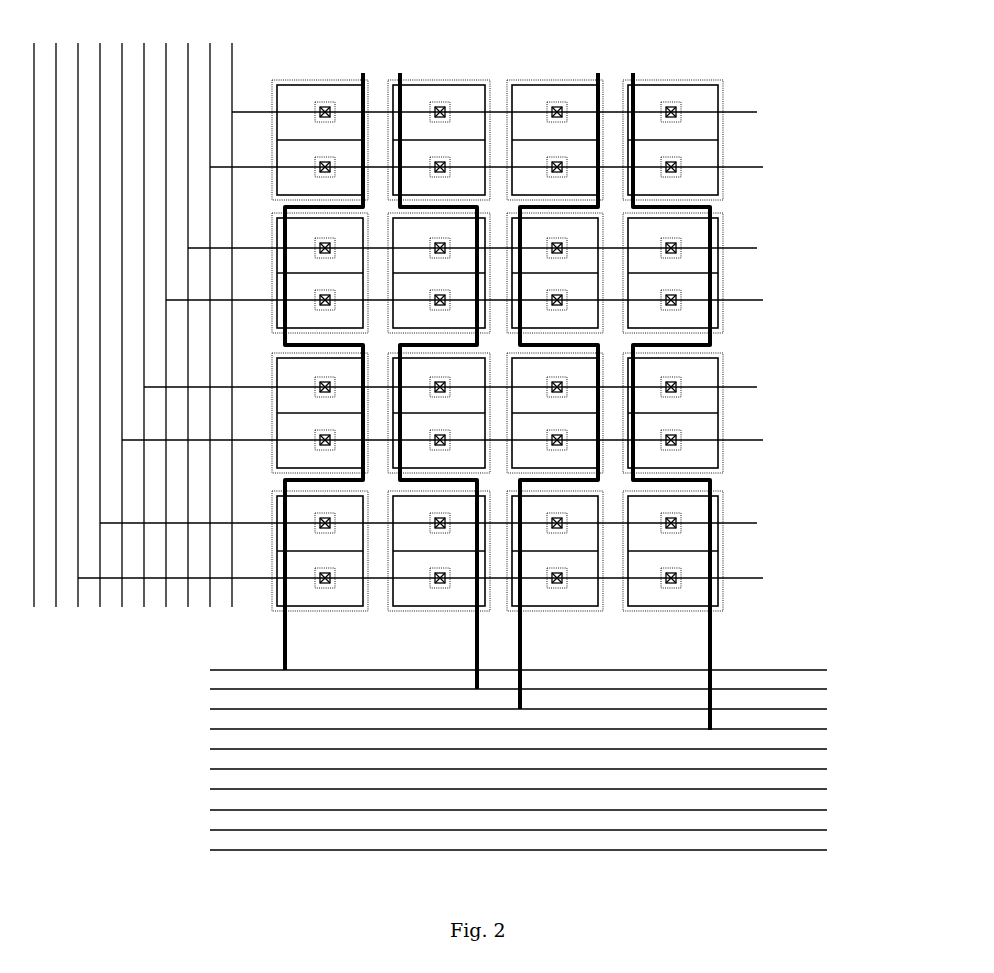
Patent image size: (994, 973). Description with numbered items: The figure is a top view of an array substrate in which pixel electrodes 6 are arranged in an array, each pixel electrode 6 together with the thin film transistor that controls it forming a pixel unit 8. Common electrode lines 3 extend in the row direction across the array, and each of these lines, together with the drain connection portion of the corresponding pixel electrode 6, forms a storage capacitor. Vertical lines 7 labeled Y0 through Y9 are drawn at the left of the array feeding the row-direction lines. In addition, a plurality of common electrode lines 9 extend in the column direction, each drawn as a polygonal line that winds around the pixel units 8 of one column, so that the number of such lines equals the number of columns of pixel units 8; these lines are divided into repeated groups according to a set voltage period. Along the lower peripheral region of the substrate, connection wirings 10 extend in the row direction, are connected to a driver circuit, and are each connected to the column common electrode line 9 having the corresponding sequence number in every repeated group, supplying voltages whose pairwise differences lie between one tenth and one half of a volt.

The common electrode line 3 is at (748, 112).
The pixel electrode 6 is at (463, 155).
The gate lines 7 is at (232, 82).
The pixel unit 8 is at (310, 75).
The common electrode line extending in the column direction 9 is at (715, 642).
The connection wiring 10 is at (805, 668).